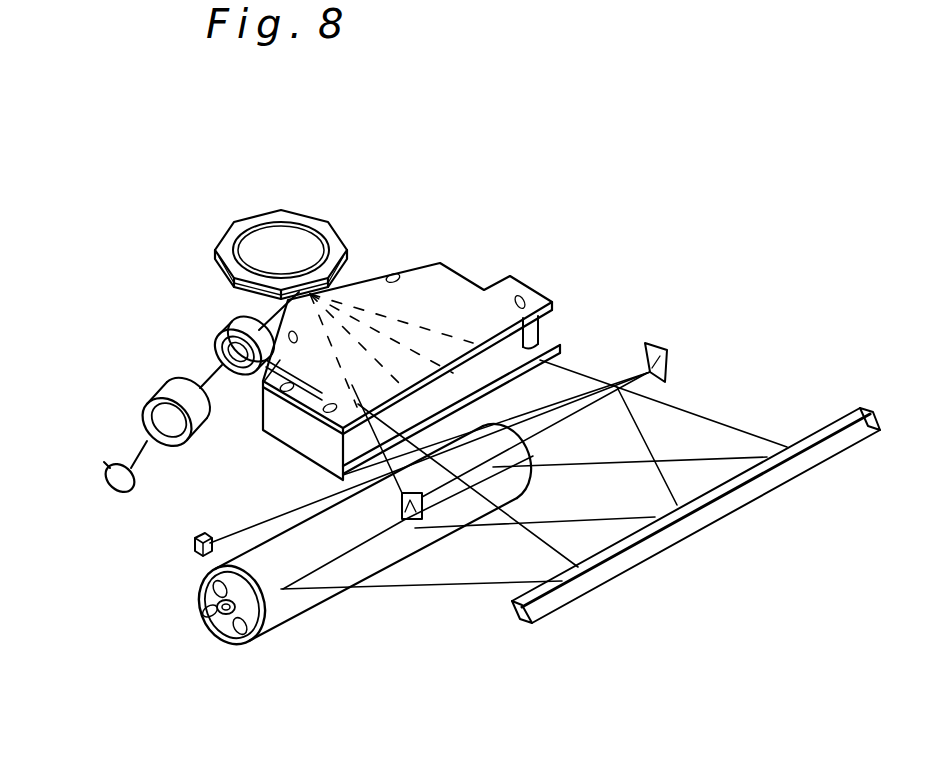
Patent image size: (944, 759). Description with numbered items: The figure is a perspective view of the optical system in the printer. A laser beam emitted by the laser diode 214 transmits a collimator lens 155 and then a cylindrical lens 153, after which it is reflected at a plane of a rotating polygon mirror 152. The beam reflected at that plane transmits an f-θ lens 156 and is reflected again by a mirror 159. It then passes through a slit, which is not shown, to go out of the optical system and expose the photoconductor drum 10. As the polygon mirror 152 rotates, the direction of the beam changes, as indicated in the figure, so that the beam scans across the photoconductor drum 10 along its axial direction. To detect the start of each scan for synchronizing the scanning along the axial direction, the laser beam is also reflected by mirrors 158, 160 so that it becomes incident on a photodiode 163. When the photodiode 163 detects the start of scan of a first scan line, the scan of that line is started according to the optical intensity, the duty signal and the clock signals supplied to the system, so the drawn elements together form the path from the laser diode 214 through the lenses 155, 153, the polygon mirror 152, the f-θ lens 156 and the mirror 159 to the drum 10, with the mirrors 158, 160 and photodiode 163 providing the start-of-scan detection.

The photoconductor drum 10 is at (287, 627).
The polygon mirror 152 is at (300, 240).
The cylindrical lens 153 is at (228, 328).
The collimator lens 155 is at (182, 400).
The f-θ lens 156 is at (465, 268).
The mirror 158 is at (409, 520).
The mirror 159 is at (663, 543).
The mirror 160 is at (657, 343).
The photodiode 163 is at (193, 552).
The laser diode 214 is at (112, 482).